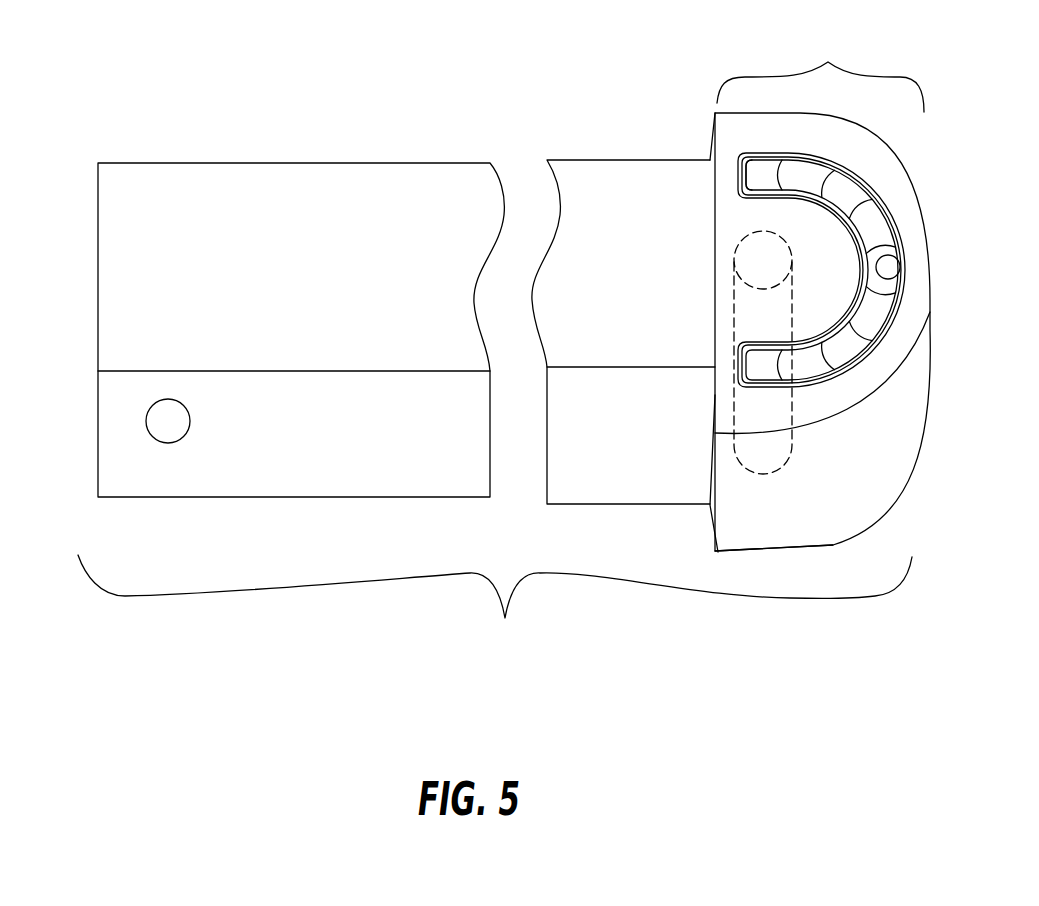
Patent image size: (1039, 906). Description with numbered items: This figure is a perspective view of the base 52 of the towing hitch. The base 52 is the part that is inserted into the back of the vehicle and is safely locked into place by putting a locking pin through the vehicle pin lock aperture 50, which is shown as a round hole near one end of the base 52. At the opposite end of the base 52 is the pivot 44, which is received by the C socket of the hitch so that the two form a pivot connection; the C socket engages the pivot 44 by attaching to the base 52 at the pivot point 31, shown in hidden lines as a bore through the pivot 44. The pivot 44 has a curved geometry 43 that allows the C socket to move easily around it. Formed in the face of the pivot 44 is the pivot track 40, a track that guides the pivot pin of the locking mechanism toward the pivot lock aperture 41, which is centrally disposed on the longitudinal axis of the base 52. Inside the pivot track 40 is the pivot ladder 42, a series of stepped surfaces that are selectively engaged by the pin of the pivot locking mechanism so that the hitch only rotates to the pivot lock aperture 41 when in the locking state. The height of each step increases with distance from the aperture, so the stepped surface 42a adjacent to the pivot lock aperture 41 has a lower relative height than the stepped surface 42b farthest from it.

The pivot point 31 is at (760, 256).
The pivot track 40 is at (832, 163).
The pivot lock aperture 41 is at (890, 267).
The pivot ladder 42 is at (865, 363).
The stepped surface 42a is at (882, 241).
The stepped surface 42b is at (764, 168).
The curved geometry 43 is at (820, 70).
The pivot 44 is at (832, 546).
The vehicle pin lock aperture 50 is at (168, 428).
The base 52 is at (495, 604).